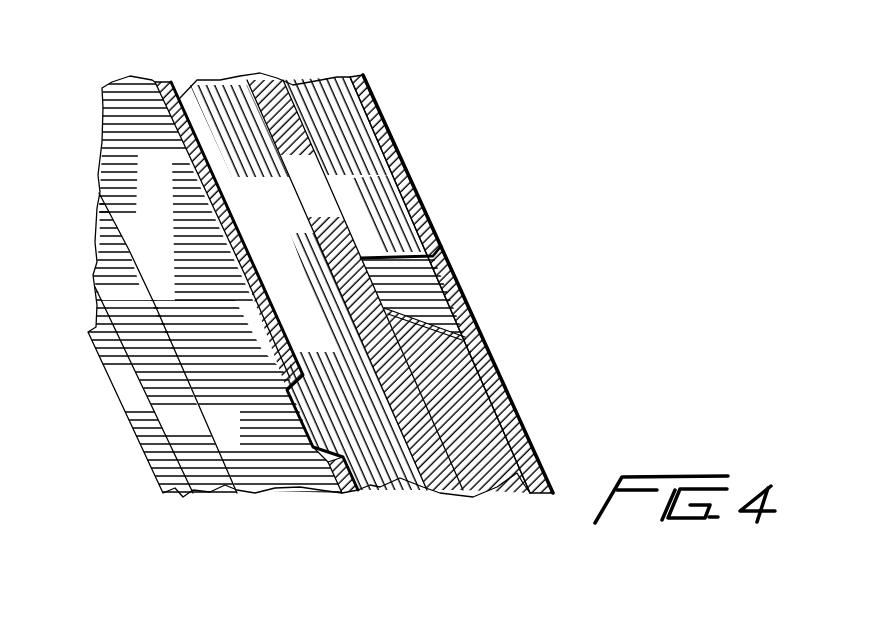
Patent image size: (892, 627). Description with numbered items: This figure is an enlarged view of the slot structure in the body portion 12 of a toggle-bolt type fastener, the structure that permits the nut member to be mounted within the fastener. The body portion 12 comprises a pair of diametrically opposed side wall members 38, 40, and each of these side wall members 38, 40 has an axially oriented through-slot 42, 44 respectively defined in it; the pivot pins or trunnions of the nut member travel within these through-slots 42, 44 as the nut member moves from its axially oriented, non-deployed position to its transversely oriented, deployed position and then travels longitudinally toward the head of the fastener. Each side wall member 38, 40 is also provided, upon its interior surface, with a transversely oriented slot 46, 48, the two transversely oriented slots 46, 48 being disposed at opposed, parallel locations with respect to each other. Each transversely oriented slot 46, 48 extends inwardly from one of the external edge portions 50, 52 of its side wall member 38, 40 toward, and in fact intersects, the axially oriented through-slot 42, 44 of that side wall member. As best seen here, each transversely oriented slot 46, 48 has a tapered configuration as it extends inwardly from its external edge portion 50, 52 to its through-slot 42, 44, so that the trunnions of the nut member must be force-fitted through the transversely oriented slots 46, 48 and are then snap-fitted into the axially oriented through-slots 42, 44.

The body portion 12 is at (510, 397).
The side wall member 38 is at (380, 103).
The axially oriented through-slot 42 is at (307, 183).
The external edge portion 50 is at (430, 208).
The transversely oriented slot 46 is at (427, 283).
The side wall member 40 is at (195, 305).
The external edge portion 52 is at (267, 333).
The axially oriented through-slot 44 is at (167, 410).
The transversely oriented slot 48 is at (307, 430).